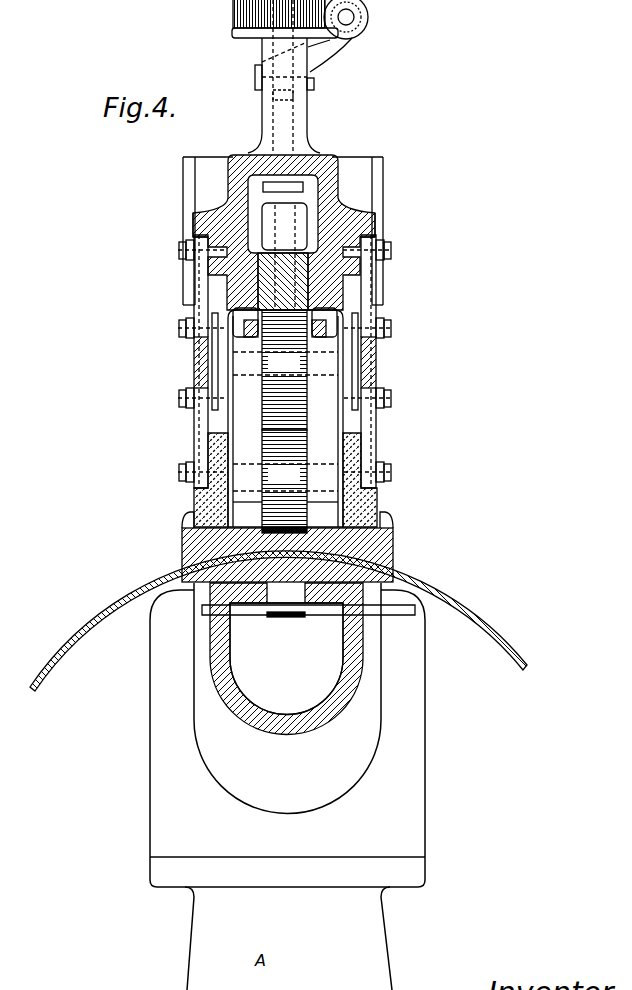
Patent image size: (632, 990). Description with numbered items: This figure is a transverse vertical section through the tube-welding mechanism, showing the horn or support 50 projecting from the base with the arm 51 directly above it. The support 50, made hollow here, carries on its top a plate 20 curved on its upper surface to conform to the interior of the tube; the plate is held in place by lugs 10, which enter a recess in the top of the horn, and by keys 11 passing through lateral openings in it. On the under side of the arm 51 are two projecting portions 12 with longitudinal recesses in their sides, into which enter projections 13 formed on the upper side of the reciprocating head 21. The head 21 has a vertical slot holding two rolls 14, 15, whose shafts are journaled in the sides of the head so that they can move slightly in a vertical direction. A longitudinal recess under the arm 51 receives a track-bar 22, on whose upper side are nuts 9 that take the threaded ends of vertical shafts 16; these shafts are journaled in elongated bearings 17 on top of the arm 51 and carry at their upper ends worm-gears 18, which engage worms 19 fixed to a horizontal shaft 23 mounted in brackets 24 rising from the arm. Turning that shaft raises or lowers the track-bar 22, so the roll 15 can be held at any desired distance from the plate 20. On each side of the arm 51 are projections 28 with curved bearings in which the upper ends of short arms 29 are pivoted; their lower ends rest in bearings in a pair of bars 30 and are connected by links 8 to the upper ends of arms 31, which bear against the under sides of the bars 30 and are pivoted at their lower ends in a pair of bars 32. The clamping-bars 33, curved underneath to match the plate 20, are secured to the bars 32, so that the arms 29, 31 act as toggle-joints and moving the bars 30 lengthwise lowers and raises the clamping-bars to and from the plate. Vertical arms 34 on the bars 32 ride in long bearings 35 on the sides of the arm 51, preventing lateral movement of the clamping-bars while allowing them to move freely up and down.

The links 8 is at (194, 372).
The nuts 9 is at (284, 226).
The lugs 10 is at (282, 616).
The keys 11 is at (402, 615).
The projecting portions 12 is at (284, 414).
The projections 13 is at (285, 322).
The roll 14 is at (284, 370).
The roll 15 is at (284, 481).
The vertical shafts 16 is at (289, 192).
The elongated bearings 17 is at (284, 90).
The worm-gears 18 is at (236, 19).
The worms 19 is at (367, 27).
The plate 20 is at (194, 586).
The reciprocating head 21 is at (285, 418).
The track-bar 22 is at (283, 257).
The horizontal shaft 23 is at (348, 16).
The brackets 24 is at (330, 55).
The projections 28 is at (194, 218).
The short arms 29 is at (200, 283).
The bars 30 is at (194, 352).
The arms 31 is at (198, 433).
The bars 32 is at (194, 500).
The clamping-bars 33 is at (182, 548).
The vertical arms 34 is at (283, 370).
The long bearings 35 is at (283, 231).
The horn or support 50 is at (286, 659).
The arm 51 is at (246, 154).